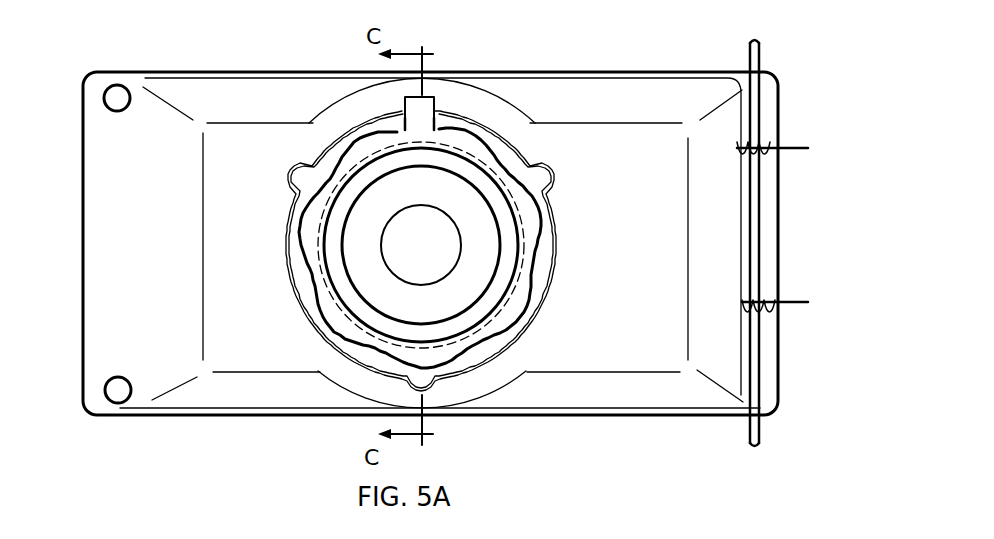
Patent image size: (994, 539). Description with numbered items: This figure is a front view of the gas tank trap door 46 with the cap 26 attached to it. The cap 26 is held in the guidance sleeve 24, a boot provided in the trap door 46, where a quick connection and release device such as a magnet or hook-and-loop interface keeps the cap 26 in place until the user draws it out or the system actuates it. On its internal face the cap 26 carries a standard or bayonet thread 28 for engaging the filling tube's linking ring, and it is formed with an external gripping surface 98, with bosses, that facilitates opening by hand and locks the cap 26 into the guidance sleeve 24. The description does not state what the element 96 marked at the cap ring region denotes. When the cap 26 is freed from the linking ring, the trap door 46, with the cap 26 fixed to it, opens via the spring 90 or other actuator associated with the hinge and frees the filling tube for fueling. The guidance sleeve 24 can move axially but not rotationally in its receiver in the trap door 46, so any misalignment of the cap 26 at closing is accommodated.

The guidance sleeve 24 is at (517, 148).
The cap 26 is at (385, 292).
The bayonet thread 28 is at (466, 362).
The trap door 46 is at (98, 249).
The spring 90 is at (790, 147).
The retaining ring 96 is at (458, 322).
The external gripping surface 98 is at (315, 263).